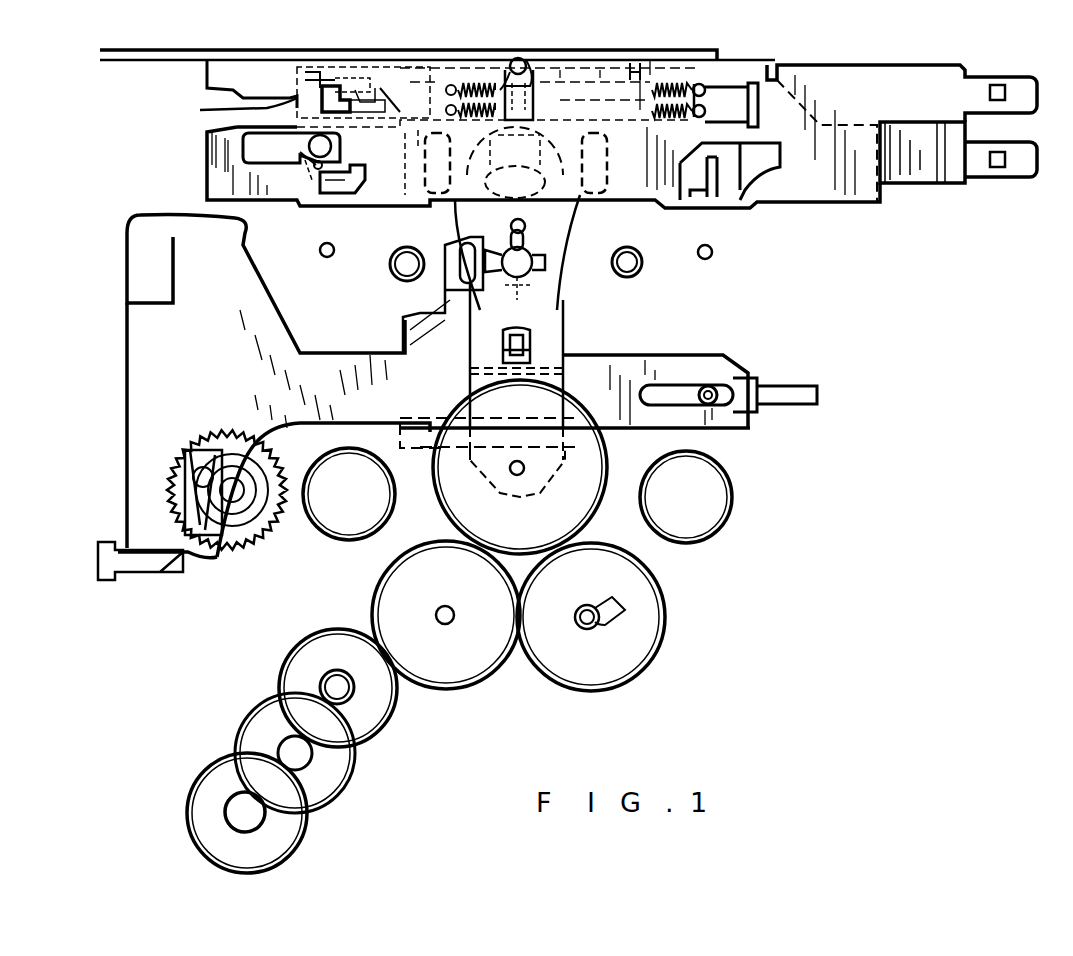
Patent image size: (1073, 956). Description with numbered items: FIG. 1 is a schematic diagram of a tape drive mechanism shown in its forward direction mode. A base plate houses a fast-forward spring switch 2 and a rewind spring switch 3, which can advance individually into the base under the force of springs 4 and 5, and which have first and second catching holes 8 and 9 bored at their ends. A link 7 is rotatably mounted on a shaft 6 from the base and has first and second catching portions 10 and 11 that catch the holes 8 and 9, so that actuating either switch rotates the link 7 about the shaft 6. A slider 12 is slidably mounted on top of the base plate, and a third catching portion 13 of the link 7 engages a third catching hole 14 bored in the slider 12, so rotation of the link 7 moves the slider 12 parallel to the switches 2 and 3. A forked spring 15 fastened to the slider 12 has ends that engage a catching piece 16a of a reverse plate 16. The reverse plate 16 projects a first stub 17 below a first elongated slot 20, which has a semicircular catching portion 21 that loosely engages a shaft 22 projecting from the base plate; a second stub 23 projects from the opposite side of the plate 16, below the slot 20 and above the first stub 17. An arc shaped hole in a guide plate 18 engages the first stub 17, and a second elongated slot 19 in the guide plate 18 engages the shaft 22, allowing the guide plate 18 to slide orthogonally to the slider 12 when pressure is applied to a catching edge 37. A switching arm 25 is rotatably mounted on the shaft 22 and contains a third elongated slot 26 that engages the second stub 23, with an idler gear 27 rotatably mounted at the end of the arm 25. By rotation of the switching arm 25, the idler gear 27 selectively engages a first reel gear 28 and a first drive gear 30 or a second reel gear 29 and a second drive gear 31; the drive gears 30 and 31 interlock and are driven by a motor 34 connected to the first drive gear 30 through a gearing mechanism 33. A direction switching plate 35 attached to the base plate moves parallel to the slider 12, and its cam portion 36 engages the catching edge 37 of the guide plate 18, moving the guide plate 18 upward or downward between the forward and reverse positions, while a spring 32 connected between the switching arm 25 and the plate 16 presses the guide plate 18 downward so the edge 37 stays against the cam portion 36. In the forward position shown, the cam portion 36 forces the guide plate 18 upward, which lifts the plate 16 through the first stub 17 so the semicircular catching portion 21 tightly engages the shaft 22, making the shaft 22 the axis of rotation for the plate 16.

The fast-forward spring switch 2 is at (880, 80).
The rewind spring switch 3 is at (905, 185).
The spring 4 is at (668, 83).
The spring 5 is at (700, 84).
The shaft 6 is at (297, 143).
The link 7 is at (377, 93).
The first catching hole 8 is at (340, 195).
The second catching hole 9 is at (358, 72).
The first catching portion 10 is at (322, 195).
The second catching portion 11 is at (332, 72).
The slider 12 is at (558, 60).
The third catching portion 13 is at (310, 70).
The third catching hole 14 is at (232, 109).
The forked spring 15 is at (522, 78).
The reverse plate 16 is at (545, 235).
The catching piece 16a is at (512, 87).
The first stub 17 is at (553, 292).
The guide plate 18 is at (555, 270).
The second elongated slot 19 is at (403, 320).
The first elongated slot 20 is at (495, 190).
The semicircular catching portion 21 is at (495, 200).
The shaft 22 is at (500, 215).
The second stub 23 is at (575, 232).
The switching arm 25 is at (580, 380).
The third elongated slot 26 is at (540, 255).
The idler gear 27 is at (597, 500).
The first reel gear 28 is at (340, 540).
The second reel gear 29 is at (732, 522).
The first drive gear 30 is at (450, 690).
The second drive gear 31 is at (641, 665).
The spring 32 is at (533, 312).
The gearing mechanism 33 is at (383, 730).
The motor 34 is at (285, 837).
The direction switching plate 35 is at (147, 393).
The cam portion 36 is at (500, 300).
The catching edge 37 is at (490, 330).